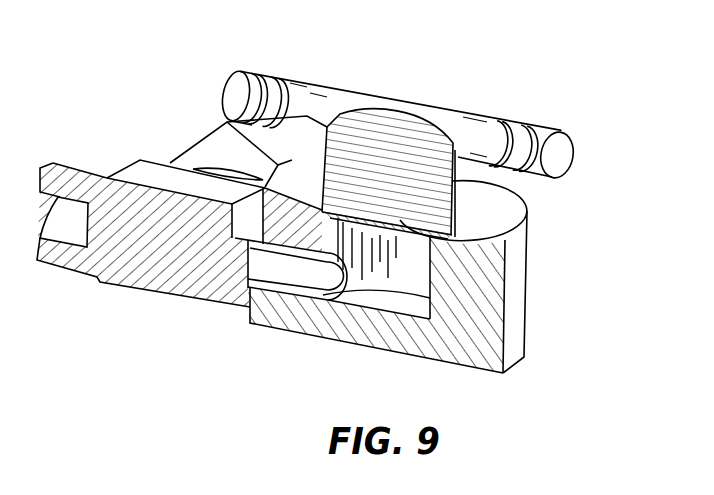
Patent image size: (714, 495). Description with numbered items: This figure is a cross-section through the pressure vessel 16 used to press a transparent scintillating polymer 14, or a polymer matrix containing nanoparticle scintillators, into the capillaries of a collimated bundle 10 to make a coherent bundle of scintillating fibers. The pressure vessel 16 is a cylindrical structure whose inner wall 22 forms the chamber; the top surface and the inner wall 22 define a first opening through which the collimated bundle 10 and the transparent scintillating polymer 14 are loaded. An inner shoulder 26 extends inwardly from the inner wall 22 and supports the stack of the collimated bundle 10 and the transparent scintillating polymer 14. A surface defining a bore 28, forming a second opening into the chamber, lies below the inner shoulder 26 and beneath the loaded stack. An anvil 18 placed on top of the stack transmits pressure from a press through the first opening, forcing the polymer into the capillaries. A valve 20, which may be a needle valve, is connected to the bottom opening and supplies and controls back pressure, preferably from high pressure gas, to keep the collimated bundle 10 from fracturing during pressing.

The collimated bundle 10 is at (432, 287).
The transparent scintillating polymer 14 is at (478, 202).
The pressure vessel 16 is at (523, 330).
The anvil 18 is at (403, 120).
The valve 20 is at (202, 142).
The inner wall 22 is at (430, 302).
The inner shoulder 26 is at (440, 249).
The bore 28 is at (340, 287).